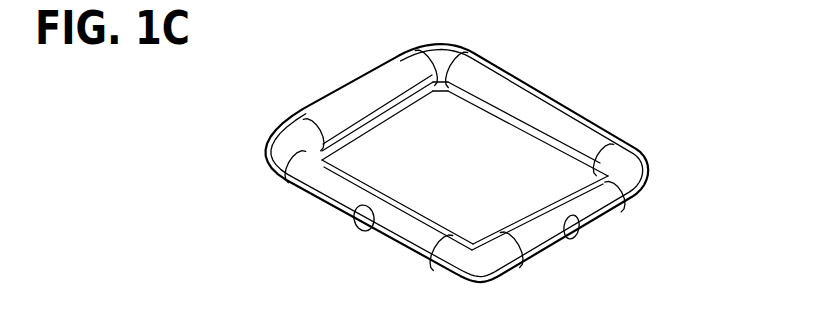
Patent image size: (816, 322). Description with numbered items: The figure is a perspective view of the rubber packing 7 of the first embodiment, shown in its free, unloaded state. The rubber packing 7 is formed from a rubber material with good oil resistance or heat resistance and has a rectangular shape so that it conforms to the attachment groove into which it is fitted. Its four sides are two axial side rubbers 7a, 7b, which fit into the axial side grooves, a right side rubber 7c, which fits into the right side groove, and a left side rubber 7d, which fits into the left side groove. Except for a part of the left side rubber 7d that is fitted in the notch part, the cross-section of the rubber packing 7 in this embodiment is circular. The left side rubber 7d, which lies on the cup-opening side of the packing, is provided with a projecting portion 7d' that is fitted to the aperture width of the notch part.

The rubber packing 7 is at (553, 71).
The axial side rubber 7a is at (393, 228).
The axial side rubber 7b is at (577, 122).
The right side rubber 7c is at (587, 209).
The left side rubber 7d is at (360, 96).
The projecting portion 7d' is at (388, 129).